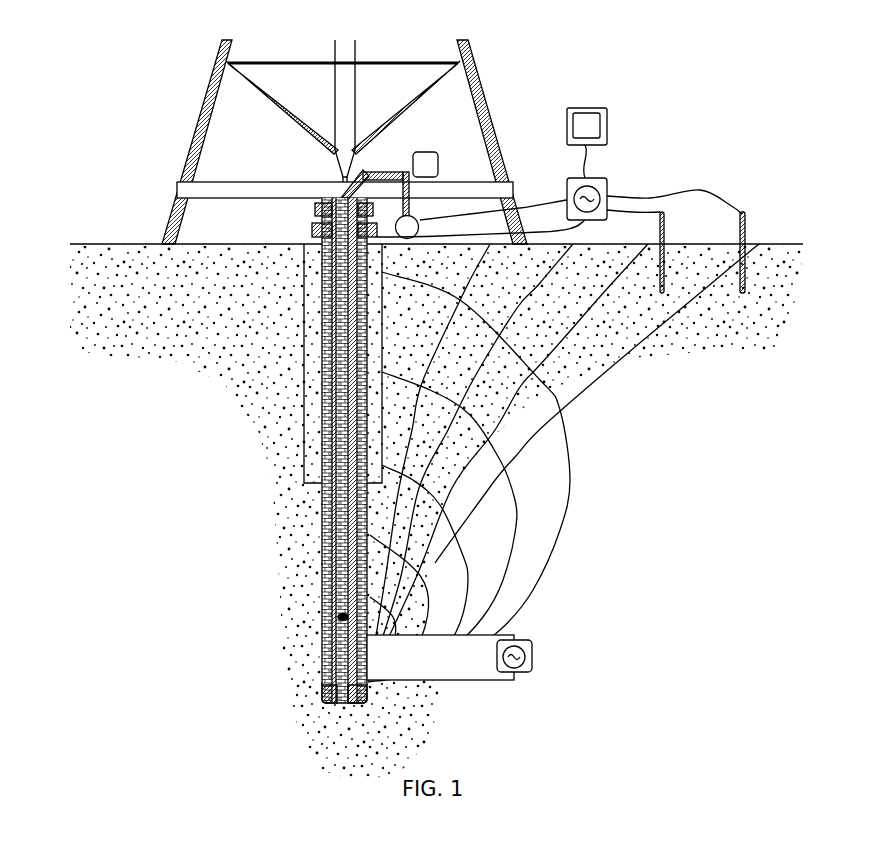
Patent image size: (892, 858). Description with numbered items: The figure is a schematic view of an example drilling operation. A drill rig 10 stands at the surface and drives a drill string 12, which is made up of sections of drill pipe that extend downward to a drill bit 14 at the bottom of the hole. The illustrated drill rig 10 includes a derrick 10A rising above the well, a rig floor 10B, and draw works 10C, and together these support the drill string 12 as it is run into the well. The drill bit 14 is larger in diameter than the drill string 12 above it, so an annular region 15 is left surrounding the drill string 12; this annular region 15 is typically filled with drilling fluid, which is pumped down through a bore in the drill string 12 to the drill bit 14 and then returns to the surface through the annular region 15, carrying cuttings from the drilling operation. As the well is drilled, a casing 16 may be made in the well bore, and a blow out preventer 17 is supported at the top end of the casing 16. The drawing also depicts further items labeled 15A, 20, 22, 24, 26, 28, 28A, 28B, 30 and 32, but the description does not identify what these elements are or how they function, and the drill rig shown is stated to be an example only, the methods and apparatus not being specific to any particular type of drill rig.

The drill rig 10 is at (100, 88).
The derrick 10A is at (476, 86).
The rig floor 10B is at (177, 190).
The draw works 10C is at (343, 177).
The drill string 12 is at (322, 533).
The drill bit 14 is at (322, 695).
The annular region 15 is at (322, 497).
The sensor unit 15A is at (445, 138).
The casing 16 is at (304, 432).
The blow out preventer 17 is at (315, 210).
The power source 20 is at (533, 656).
The sensor 22 is at (322, 608).
The sheave 24 is at (412, 214).
The power supply 26 is at (607, 180).
The current flow pattern 28 is at (571, 480).
The current flow line 28A is at (592, 308).
The equipotential line 28B is at (515, 533).
The ground electrode 30 is at (746, 218).
The computer 32 is at (593, 108).